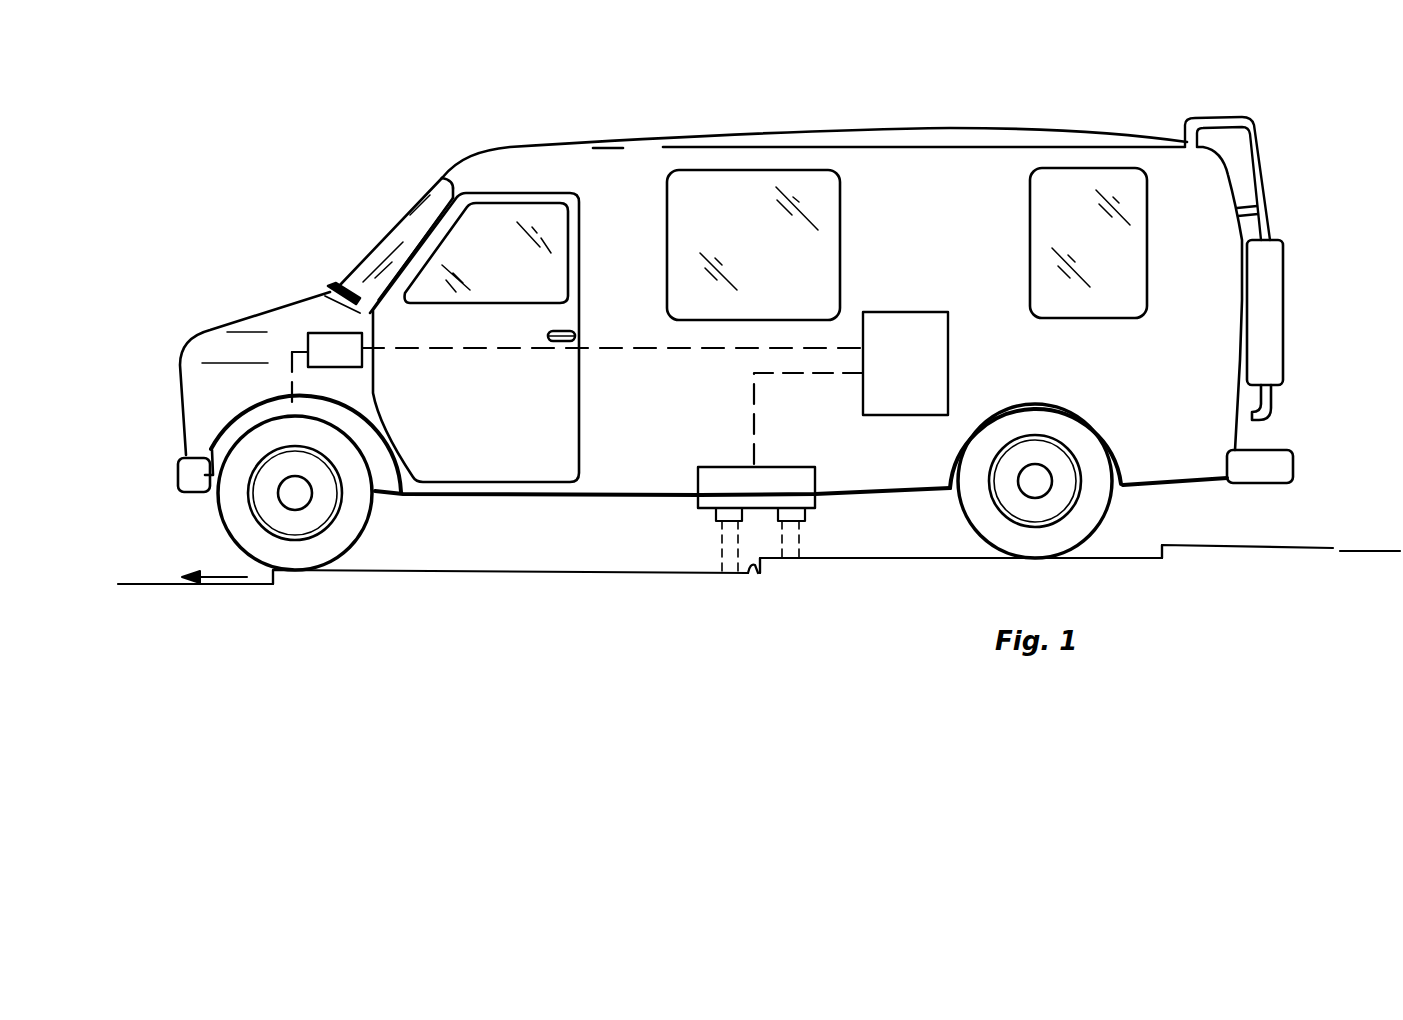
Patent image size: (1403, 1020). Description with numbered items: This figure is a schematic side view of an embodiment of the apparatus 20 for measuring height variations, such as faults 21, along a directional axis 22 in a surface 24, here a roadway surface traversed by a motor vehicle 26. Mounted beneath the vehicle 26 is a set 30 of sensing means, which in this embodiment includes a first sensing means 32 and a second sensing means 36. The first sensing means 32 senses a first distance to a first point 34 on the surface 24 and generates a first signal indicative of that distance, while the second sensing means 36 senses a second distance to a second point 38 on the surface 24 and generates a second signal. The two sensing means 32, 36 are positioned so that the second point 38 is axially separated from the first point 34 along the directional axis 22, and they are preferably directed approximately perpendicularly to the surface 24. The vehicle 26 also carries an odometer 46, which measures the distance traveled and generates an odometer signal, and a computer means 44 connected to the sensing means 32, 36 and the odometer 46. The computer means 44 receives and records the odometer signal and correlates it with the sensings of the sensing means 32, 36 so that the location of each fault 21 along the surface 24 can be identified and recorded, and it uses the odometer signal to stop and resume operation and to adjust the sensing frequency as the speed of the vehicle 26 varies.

The apparatus 20 is at (836, 331).
The fault 21 is at (275, 574).
The directional axis 22 is at (212, 575).
The surface 24 is at (440, 573).
The motor vehicle 26 is at (1117, 142).
The set of sensing means 30 is at (690, 474).
The first sensing means 32 is at (717, 520).
The first point 34 is at (730, 572).
The second sensing means 36 is at (805, 520).
The second point 38 is at (790, 557).
The computer means 44 is at (927, 343).
The odometer 46 is at (325, 347).